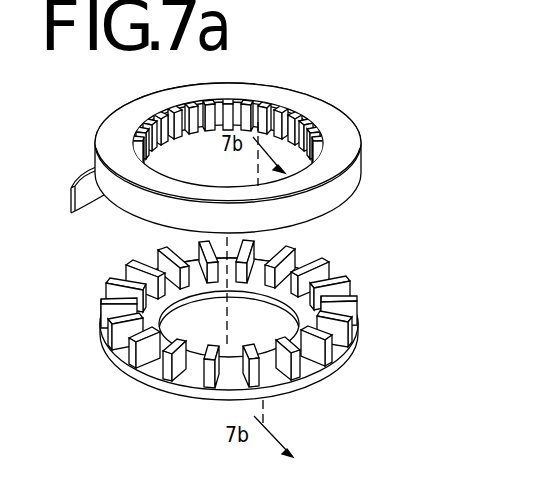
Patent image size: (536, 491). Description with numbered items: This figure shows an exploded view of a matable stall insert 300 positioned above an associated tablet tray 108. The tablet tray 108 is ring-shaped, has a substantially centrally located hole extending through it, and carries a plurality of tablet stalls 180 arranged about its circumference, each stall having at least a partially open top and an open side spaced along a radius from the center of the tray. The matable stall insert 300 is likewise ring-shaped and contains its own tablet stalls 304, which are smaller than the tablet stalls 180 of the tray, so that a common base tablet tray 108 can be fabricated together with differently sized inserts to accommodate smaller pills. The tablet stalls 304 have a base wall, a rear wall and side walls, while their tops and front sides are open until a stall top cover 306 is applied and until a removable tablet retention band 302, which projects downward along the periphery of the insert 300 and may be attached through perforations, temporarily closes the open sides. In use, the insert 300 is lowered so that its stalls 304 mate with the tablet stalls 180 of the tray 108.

The matable stall insert 300 is at (350, 132).
The removable tablet retention band 302 is at (122, 198).
The tablet stalls 304 is at (263, 108).
The stall top cover 306 is at (295, 98).
The tablet stalls 180 is at (345, 303).
The tablet tray 108 is at (345, 323).